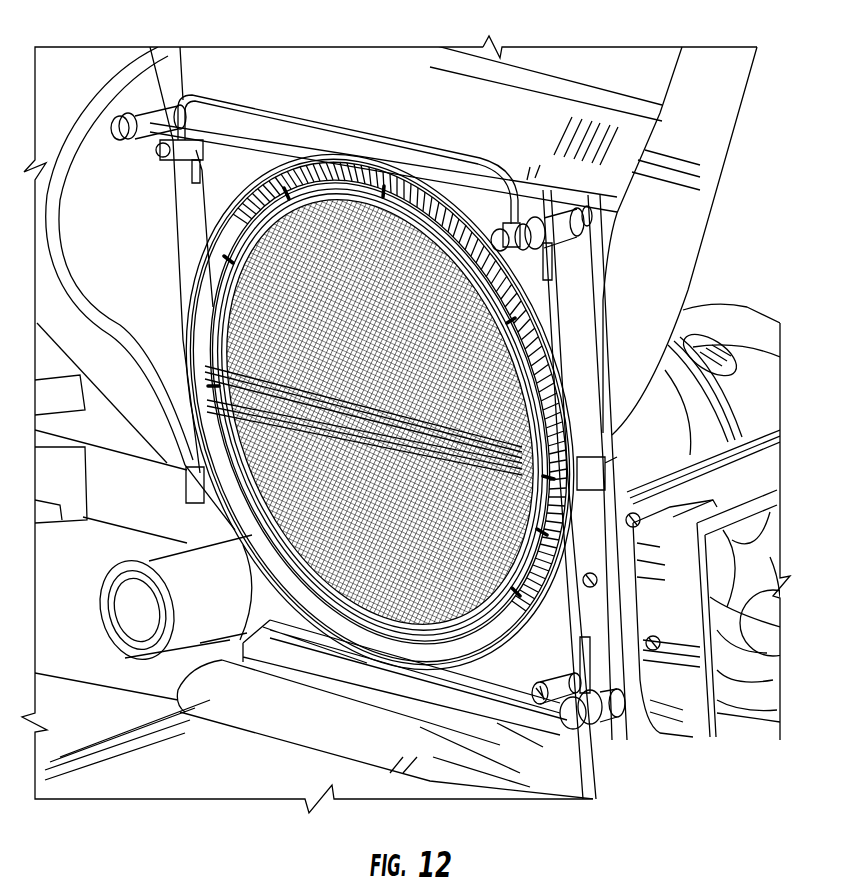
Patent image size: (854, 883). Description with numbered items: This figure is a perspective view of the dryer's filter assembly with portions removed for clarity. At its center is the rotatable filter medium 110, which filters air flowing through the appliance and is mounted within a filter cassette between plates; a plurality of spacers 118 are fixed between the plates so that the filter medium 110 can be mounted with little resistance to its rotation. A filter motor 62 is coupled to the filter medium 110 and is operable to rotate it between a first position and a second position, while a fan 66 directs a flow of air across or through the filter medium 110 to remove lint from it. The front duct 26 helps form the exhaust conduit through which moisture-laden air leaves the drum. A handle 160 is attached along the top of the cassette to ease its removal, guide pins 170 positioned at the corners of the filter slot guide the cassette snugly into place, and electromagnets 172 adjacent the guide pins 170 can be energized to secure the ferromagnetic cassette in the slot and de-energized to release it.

The front duct 26 is at (695, 198).
The filter motor 62 is at (203, 597).
The fan 66 is at (770, 623).
The filter medium 110 is at (347, 230).
The spacers 118 is at (175, 160).
The handle 160 is at (430, 150).
The guide pins 170 is at (173, 98).
The electromagnets 172 is at (552, 260).